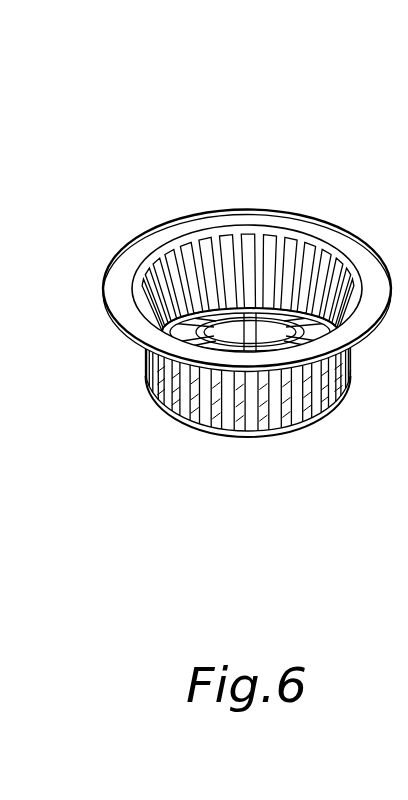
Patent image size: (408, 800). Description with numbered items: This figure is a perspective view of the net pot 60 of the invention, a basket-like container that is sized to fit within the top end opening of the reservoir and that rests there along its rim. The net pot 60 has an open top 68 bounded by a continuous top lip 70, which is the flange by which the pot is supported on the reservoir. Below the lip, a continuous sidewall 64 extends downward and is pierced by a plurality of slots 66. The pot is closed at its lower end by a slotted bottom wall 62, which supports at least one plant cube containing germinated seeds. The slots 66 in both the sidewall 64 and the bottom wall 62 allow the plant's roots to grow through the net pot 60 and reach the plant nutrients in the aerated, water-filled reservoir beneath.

The net pot 60 is at (165, 150).
The slotted bottom wall 62 is at (188, 418).
The continuous sidewall 64 is at (152, 375).
The slots 66 is at (153, 395).
The open top 68 is at (213, 247).
The continuous top lip 70 is at (248, 220).